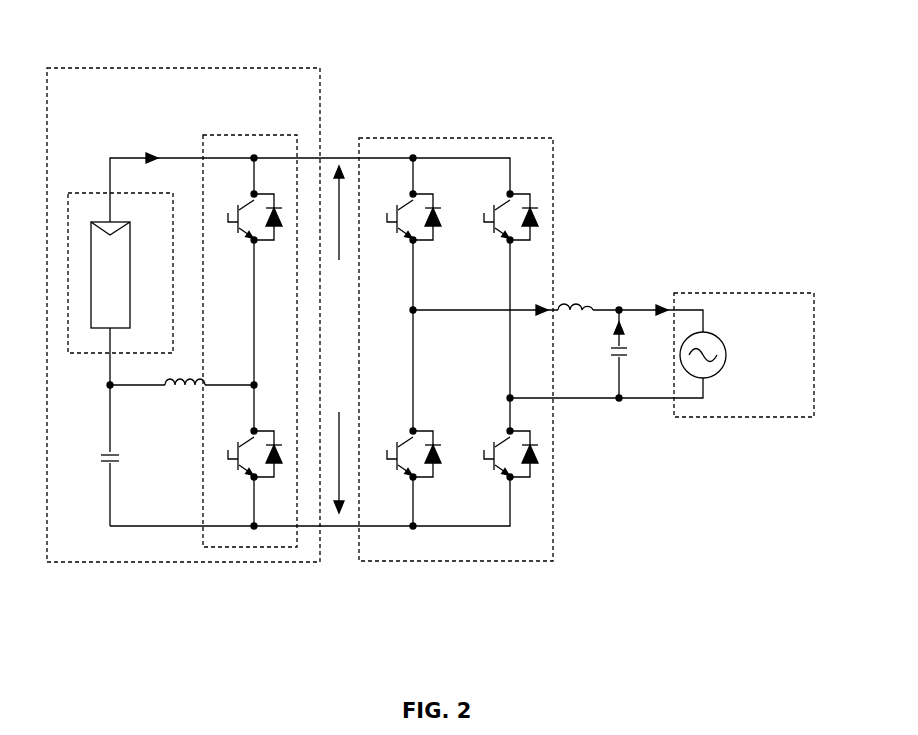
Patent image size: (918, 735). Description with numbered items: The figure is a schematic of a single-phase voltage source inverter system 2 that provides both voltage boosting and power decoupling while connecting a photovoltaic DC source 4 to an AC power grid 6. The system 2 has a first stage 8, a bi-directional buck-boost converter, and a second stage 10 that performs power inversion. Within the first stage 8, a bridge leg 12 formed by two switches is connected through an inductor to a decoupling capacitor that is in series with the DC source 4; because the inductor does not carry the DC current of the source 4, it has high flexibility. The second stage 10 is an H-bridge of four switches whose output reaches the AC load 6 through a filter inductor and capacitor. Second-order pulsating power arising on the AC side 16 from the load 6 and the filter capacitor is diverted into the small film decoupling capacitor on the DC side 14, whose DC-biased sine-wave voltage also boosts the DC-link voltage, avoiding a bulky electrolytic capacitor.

The voltage source inverter system 2 is at (412, 85).
The photovoltaic DC source 4 is at (86, 193).
The AC power grid 6 is at (720, 293).
The first stage 8 is at (168, 68).
The second stage 10 is at (493, 138).
The bridge leg 12 is at (243, 135).
The DC side 14 is at (345, 580).
The AC side 16 is at (578, 578).